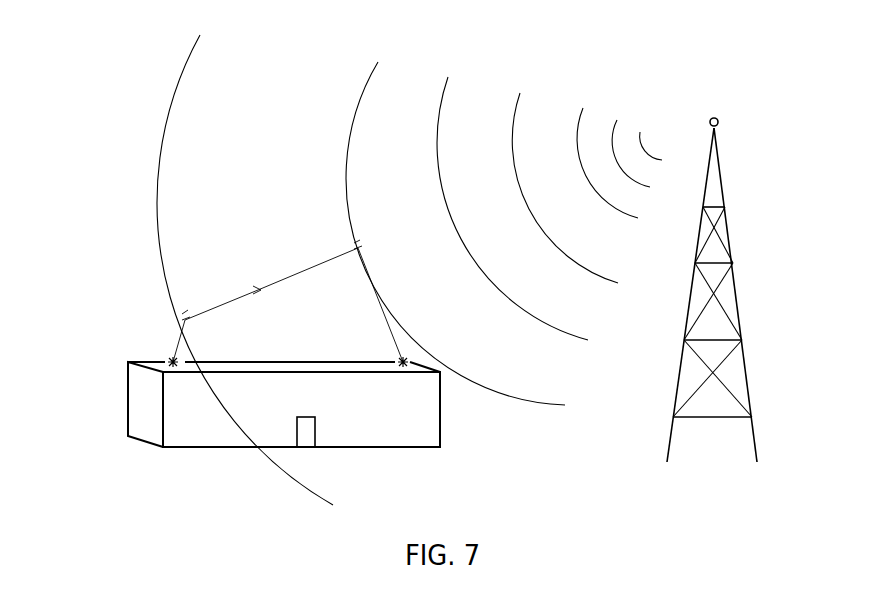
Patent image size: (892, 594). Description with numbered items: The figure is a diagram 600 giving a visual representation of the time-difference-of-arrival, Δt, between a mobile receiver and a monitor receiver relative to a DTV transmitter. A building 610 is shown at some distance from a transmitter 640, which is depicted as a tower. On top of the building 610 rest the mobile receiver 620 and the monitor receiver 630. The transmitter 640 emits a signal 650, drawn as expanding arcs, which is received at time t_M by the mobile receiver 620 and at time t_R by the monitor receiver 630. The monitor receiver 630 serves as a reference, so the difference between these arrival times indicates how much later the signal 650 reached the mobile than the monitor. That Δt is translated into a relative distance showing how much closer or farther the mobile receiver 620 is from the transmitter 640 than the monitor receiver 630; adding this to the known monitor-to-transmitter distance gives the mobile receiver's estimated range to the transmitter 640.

The diagram 600 is at (76, 60).
The building 610 is at (140, 407).
The mobile receiver 620 is at (165, 350).
The monitor receiver 630 is at (395, 346).
The transmitter 640 is at (730, 250).
The signal 650 is at (350, 183).